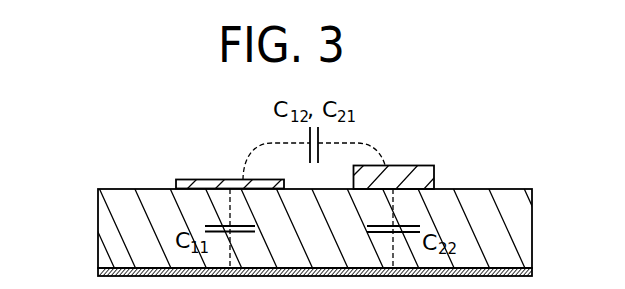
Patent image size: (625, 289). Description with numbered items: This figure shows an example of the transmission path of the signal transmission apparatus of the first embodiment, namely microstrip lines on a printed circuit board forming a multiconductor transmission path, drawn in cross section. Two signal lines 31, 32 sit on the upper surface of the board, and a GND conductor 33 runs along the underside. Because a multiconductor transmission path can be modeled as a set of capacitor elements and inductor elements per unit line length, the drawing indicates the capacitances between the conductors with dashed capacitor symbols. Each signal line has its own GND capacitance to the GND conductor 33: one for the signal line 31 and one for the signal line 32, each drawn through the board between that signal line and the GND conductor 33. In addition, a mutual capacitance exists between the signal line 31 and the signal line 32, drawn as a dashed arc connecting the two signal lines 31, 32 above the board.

The signal line 31 is at (188, 180).
The signal line 32 is at (424, 166).
The GND conductor 33 is at (98, 272).